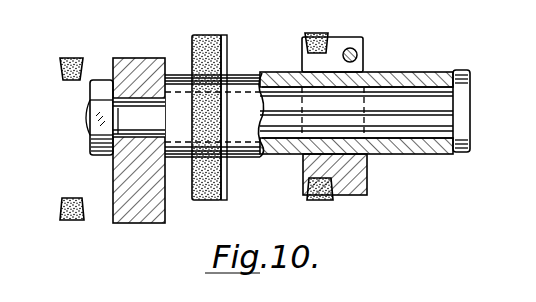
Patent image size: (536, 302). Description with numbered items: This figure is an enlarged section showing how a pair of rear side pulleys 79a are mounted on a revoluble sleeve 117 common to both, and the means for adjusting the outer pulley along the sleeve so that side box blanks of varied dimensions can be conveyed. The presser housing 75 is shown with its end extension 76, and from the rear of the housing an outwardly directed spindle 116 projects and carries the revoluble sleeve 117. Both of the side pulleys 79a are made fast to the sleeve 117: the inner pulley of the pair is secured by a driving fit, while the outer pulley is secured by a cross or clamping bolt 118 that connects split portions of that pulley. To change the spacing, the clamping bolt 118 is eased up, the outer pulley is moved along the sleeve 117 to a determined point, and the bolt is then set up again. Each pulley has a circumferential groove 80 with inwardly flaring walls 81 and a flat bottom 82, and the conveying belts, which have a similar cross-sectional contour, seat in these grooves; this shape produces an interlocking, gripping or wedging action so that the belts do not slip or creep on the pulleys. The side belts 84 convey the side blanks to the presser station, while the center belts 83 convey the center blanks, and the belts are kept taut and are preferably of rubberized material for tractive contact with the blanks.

The presser housing 75 is at (143, 58).
The end extension 76 is at (118, 62).
The side pulley 79a is at (227, 37).
The circumferential groove 80 is at (306, 50).
The inwardly flaring wall 81 is at (305, 41).
The flat bottom 82 is at (378, 170).
The center belt 83 is at (73, 81).
The side belt 84 is at (206, 200).
The spindle 116 is at (411, 103).
The revoluble sleeve 117 is at (422, 150).
The clamping bolt 118 is at (357, 55).